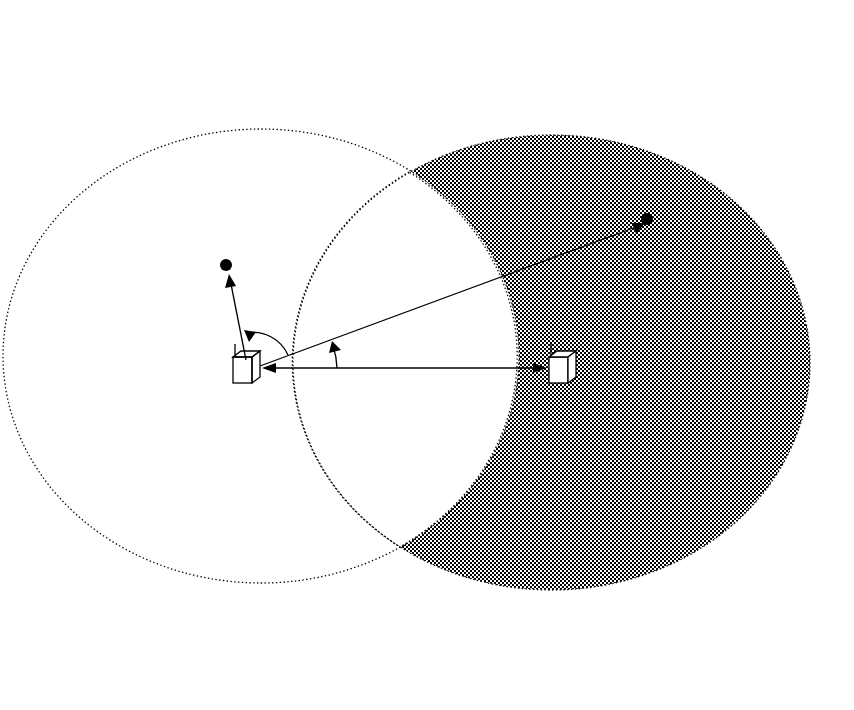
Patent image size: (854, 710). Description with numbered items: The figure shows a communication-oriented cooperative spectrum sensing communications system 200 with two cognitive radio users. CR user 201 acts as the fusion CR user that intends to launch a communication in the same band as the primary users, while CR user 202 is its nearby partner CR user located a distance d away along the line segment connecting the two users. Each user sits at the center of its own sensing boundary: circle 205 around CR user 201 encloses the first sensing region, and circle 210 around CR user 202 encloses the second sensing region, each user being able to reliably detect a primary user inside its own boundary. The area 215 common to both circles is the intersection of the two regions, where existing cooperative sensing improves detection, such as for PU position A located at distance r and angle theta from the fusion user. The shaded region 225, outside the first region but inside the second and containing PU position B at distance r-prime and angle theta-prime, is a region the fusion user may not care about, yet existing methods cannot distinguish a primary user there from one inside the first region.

The communication-oriented cooperative spectrum sensing communications system 200 is at (717, 64).
The CR user 1 201 is at (232, 370).
The CR user 2 202 is at (576, 360).
The circle 205 is at (108, 172).
The circle 210 is at (700, 178).
The area 215 is at (415, 195).
The shaded region 225 is at (745, 247).